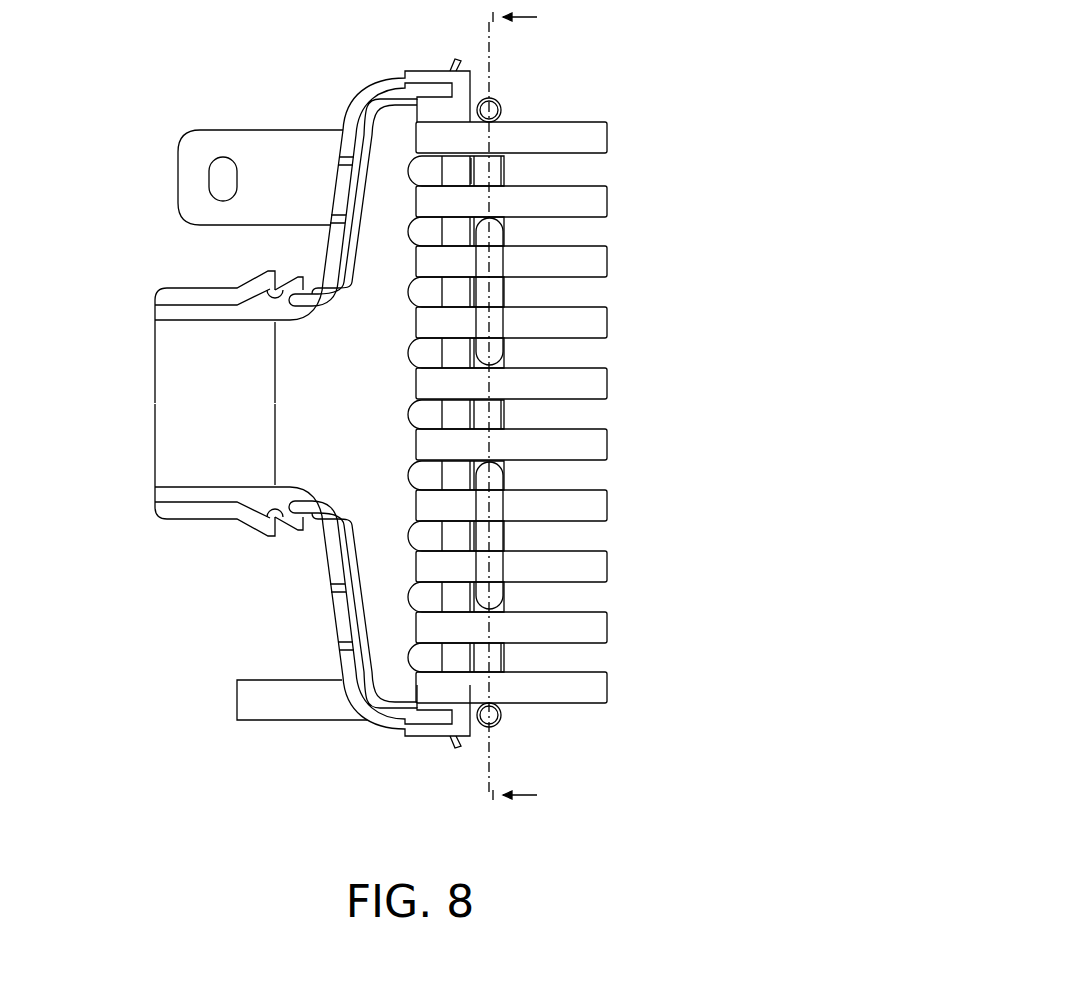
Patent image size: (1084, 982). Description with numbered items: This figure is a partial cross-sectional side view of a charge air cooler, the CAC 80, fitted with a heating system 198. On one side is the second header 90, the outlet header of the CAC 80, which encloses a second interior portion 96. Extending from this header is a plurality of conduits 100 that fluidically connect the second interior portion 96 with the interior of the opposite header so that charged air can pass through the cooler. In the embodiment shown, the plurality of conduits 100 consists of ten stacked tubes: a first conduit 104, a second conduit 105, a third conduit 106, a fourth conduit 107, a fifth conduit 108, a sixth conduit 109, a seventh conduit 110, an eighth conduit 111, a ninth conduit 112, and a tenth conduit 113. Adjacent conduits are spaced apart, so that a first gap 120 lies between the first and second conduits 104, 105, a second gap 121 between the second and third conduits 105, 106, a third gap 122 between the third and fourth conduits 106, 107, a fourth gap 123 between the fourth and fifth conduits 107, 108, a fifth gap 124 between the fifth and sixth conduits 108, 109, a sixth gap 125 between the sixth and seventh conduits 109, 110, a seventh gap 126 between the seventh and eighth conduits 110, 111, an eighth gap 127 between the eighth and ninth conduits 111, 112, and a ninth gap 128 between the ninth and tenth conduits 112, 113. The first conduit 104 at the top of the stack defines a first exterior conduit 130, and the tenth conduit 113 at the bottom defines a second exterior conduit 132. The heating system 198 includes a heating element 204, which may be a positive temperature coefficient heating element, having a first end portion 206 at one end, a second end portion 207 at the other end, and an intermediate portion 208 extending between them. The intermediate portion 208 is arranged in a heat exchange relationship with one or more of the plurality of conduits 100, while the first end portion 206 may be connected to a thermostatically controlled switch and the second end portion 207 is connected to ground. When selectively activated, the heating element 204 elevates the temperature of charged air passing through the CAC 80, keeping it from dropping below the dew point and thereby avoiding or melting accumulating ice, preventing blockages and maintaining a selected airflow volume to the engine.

The CAC 80 is at (647, 805).
The second header 90 is at (373, 96).
The second interior portion 96 is at (406, 398).
The plurality of conduits 100 is at (627, 108).
The first conduit 104 is at (598, 148).
The second conduit 105 is at (598, 211).
The third conduit 106 is at (598, 270).
The fourth conduit 107 is at (598, 330).
The fifth conduit 108 is at (598, 390).
The sixth conduit 109 is at (598, 451).
The seventh conduit 110 is at (598, 511).
The eighth conduit 111 is at (598, 573).
The ninth conduit 112 is at (598, 633).
The tenth conduit 113 is at (598, 694).
The first gap 120 is at (588, 181).
The second gap 121 is at (588, 242).
The third gap 122 is at (588, 305).
The fourth gap 123 is at (588, 365).
The fifth gap 124 is at (588, 425).
The sixth gap 125 is at (588, 486).
The seventh gap 126 is at (588, 546).
The eighth gap 127 is at (588, 607).
The ninth gap 128 is at (588, 667).
The first exterior conduit 130 is at (541, 120).
The second exterior conduit 132 is at (538, 706).
The heating system 198 is at (490, 178).
The heating element 204 is at (465, 565).
The first end portion 206 is at (497, 99).
The second end portion 207 is at (497, 727).
The intermediate portion 208 is at (487, 416).